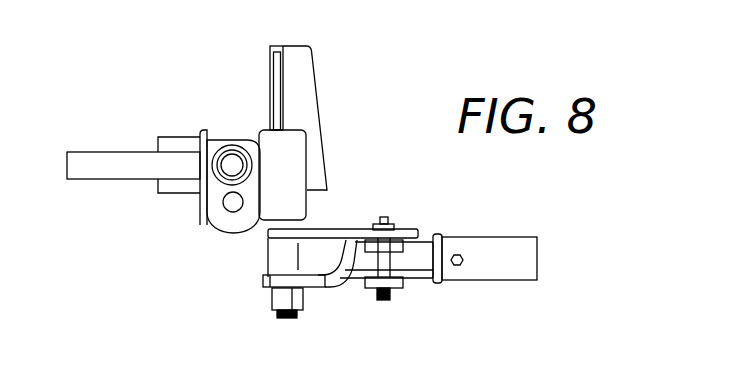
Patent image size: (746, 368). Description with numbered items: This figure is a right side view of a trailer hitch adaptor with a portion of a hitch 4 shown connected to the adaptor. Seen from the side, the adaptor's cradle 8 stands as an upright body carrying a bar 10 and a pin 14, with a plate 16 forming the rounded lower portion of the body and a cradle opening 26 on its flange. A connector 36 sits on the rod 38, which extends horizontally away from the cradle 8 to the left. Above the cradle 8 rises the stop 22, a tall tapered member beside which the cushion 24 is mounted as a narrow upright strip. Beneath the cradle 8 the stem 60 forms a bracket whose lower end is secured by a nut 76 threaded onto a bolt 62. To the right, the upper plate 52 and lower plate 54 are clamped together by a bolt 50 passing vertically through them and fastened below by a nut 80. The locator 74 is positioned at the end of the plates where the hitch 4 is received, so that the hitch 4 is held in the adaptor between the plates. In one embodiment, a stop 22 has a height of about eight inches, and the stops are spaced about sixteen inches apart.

The trailer hitch 4 is at (420, 238).
The cradle 8 is at (308, 212).
The bar 10 is at (243, 160).
The pin 14 is at (223, 203).
The plate 16 is at (222, 228).
The stop 22 is at (315, 92).
The cushion 24 is at (269, 62).
The cradle opening 26 is at (205, 132).
The connector 36 is at (170, 137).
The rod 38 is at (88, 181).
The bolt 50 is at (384, 224).
The upper plate 52 is at (417, 236).
The lower plate 54 is at (403, 283).
The stem 60 is at (268, 250).
The bolt 62 is at (297, 318).
The locator 74 is at (403, 245).
The nut 76 is at (303, 297).
The nut 80 is at (390, 300).